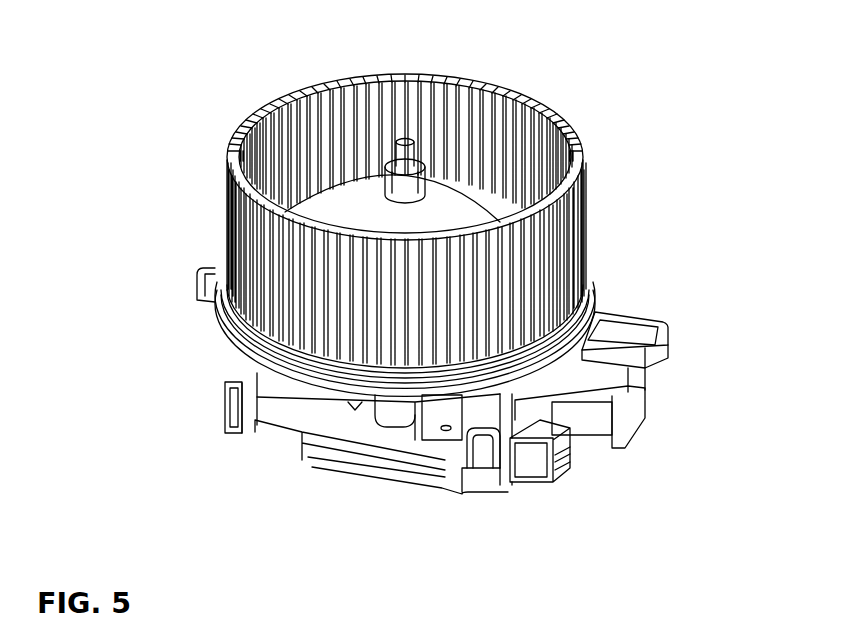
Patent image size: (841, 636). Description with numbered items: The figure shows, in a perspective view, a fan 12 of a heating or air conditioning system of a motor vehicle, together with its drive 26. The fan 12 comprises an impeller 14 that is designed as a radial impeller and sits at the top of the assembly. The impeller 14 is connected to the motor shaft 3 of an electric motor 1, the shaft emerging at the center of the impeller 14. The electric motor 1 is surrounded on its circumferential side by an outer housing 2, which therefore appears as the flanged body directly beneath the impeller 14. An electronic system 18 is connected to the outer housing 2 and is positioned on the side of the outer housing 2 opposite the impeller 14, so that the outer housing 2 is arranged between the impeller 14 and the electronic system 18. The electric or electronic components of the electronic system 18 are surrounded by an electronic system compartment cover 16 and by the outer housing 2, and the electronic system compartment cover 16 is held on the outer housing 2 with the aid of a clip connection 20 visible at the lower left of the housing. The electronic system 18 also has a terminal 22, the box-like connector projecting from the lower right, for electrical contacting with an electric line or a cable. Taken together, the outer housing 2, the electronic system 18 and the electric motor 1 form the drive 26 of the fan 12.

The electric motor 1 is at (442, 102).
The motor shaft 3 is at (414, 142).
The fan 12 is at (618, 68).
The impeller 14 is at (283, 104).
The outer housing 2 is at (243, 372).
The clip connection 20 is at (233, 403).
The electronic system compartment cover 16 is at (268, 433).
The electronic system 18 is at (446, 483).
The terminal 22 is at (571, 449).
The drive 26 is at (582, 290).